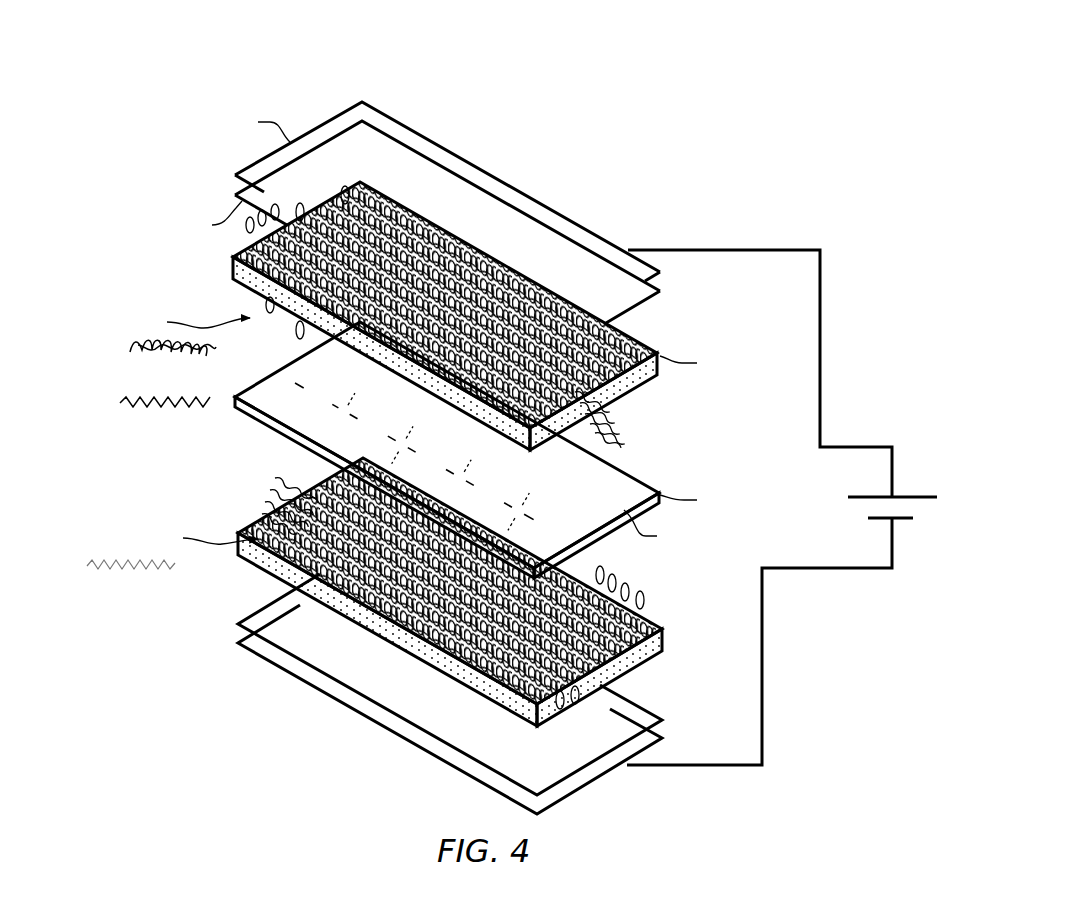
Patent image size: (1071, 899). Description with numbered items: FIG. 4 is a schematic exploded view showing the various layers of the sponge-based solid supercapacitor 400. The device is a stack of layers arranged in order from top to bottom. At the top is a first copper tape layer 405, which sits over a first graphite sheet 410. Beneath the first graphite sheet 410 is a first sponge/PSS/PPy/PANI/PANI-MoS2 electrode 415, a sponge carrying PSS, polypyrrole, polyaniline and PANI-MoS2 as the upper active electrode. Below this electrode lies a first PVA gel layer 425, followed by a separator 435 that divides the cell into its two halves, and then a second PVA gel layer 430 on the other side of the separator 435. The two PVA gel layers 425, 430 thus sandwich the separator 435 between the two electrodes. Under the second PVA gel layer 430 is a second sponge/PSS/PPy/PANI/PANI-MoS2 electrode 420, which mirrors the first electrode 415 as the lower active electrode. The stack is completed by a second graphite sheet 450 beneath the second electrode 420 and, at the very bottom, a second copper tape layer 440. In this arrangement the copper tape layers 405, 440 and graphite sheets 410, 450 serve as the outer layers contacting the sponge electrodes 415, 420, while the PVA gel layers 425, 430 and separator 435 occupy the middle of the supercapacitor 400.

The sponge-based solid supercapacitor 400 is at (150, 19).
The first copper tape layer 405 is at (589, 235).
The first graphite sheet 410 is at (644, 302).
The first sponge/PSS/PPy/PANI/PANI-MoS2 electrode 415 is at (628, 402).
The second sponge/PSS/PPy/PANI/PANI-MoS2 electrode 420 is at (477, 590).
The first PVA gel layer 425 is at (568, 491).
The second PVA gel layer 430 is at (632, 580).
The separator 435 is at (522, 541).
The second copper tape layer 440 is at (593, 782).
The second graphite sheet 450 is at (645, 710).